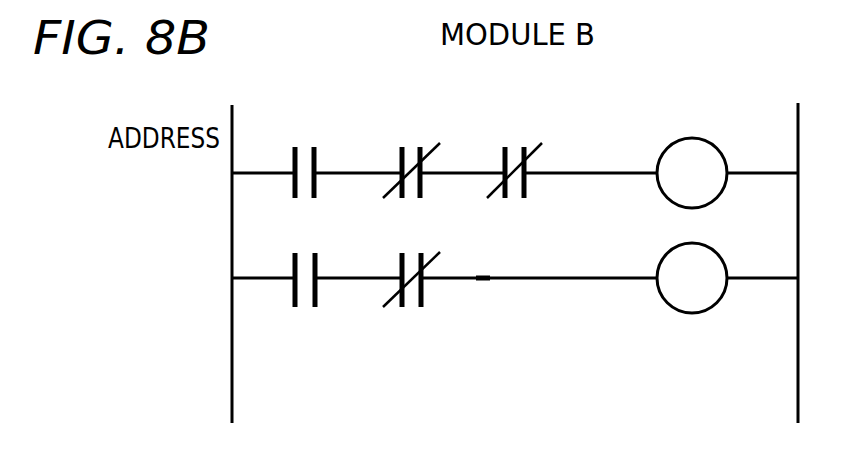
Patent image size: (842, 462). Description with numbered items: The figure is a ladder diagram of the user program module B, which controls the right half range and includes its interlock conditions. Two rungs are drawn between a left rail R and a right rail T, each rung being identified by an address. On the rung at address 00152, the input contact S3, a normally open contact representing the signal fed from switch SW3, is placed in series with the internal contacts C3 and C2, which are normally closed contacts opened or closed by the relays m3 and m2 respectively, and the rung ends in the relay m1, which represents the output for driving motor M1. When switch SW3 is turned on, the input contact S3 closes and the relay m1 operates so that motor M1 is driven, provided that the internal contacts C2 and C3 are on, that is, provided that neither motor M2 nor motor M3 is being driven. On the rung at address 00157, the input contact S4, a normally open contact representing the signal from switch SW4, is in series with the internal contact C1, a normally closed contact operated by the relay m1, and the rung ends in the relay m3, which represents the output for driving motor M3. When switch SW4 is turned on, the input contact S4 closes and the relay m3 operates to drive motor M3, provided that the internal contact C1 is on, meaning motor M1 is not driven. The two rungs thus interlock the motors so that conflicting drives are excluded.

The left power rail R is at (228, 245).
The right power rail T is at (798, 244).
The address 00152 is at (458, 176).
The address 00157 is at (458, 281).
The input contact S3 is at (305, 151).
The internal contact C3 is at (411, 151).
The internal contact C2 is at (514, 151).
The relay m1 is at (692, 173).
The input contact S4 is at (308, 258).
The internal contact C1 is at (411, 258).
The relay m3 is at (692, 278).